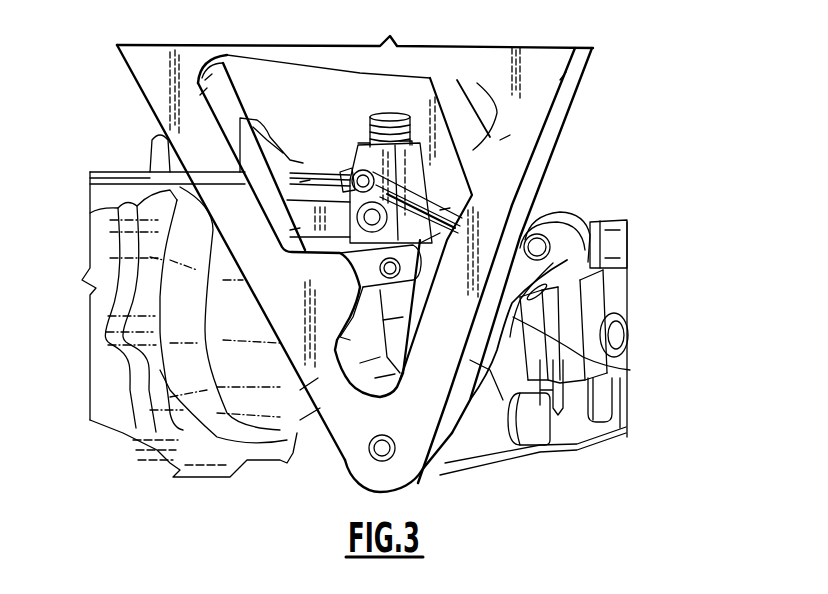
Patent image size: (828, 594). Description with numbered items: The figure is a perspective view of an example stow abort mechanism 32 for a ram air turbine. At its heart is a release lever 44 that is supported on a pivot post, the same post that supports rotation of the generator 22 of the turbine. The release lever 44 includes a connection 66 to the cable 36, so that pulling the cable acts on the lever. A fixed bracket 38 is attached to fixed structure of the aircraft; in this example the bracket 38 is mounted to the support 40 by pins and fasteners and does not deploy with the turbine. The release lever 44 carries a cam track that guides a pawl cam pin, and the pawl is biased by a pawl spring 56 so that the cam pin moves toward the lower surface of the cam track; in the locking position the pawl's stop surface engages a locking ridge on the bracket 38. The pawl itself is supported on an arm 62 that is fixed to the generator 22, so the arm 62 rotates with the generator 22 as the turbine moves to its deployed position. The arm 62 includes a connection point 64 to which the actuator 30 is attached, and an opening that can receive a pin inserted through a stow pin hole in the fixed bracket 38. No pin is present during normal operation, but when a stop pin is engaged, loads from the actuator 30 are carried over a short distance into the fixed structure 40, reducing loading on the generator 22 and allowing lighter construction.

The generator 22 is at (280, 387).
The actuator 30 is at (618, 243).
The stow abort mechanism 32 is at (450, 168).
The cable 36 is at (162, 180).
The fixed bracket 38 is at (392, 300).
The support 40 is at (353, 417).
The release lever 44 is at (427, 197).
The pawl spring 56 is at (560, 345).
The arm 62 is at (502, 440).
The connection point 64 is at (543, 255).
The connection 66 is at (355, 172).